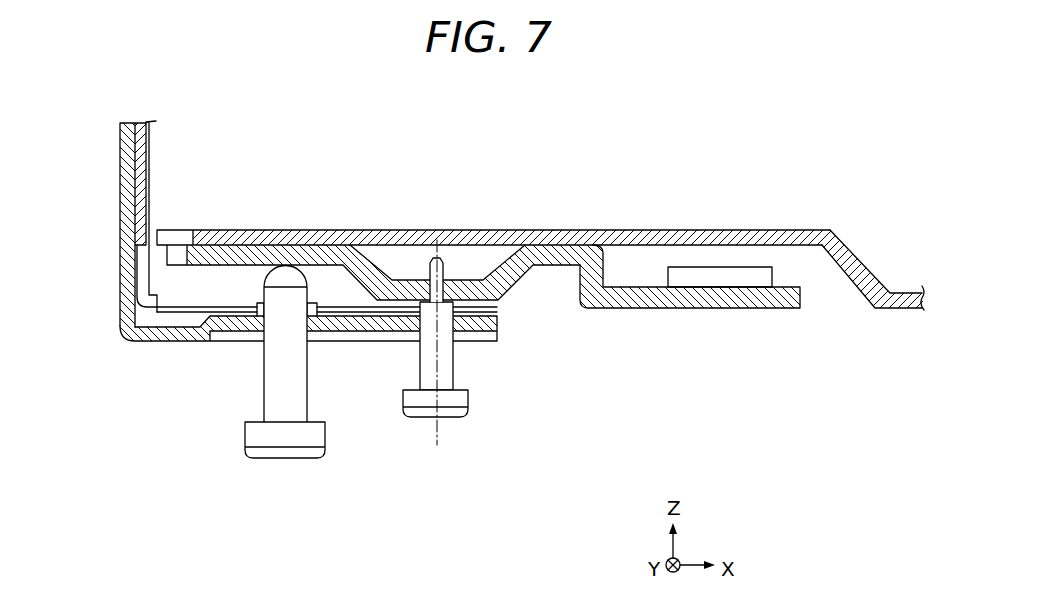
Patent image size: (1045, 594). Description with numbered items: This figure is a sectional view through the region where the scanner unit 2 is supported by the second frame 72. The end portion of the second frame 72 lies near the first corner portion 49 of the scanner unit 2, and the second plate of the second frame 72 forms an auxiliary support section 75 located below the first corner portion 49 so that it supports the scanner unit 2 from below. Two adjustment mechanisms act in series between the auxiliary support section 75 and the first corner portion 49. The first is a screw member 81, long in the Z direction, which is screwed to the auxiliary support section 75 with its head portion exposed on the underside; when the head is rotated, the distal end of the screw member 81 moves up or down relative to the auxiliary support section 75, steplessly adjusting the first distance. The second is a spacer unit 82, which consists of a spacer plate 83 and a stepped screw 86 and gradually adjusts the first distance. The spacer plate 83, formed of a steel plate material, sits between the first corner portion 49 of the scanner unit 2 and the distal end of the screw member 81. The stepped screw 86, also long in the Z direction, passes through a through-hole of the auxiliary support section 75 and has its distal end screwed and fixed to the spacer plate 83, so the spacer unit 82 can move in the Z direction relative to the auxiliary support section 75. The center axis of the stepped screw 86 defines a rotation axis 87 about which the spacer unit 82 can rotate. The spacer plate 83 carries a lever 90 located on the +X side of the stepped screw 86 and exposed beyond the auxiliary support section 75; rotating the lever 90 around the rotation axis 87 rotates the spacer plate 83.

The scanner unit 2 is at (905, 296).
The first corner portion 49 is at (403, 198).
The second frame 72 is at (114, 251).
The auxiliary support section 75 is at (145, 349).
The screw member 81 is at (290, 445).
The spacer unit 82 is at (642, 320).
The spacer plate 83 is at (500, 292).
The stepped screw 86 is at (412, 410).
The rotation axis 87 is at (437, 436).
The lever 90 is at (730, 300).